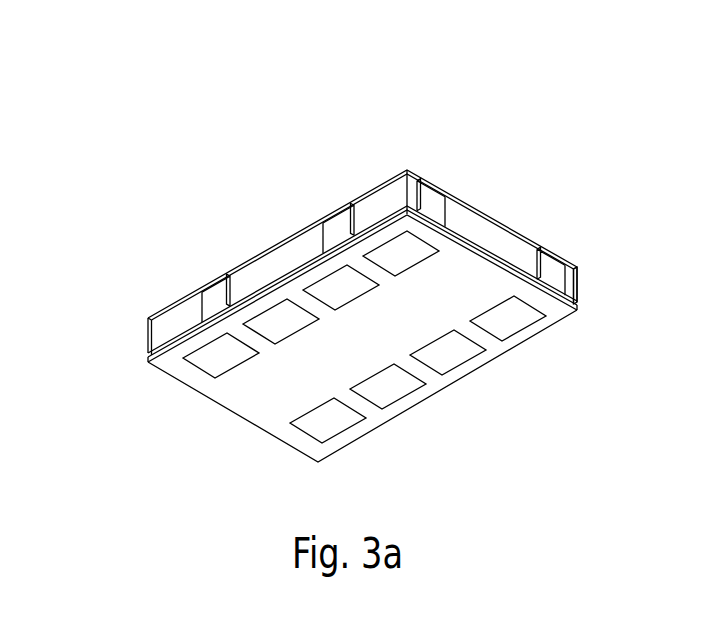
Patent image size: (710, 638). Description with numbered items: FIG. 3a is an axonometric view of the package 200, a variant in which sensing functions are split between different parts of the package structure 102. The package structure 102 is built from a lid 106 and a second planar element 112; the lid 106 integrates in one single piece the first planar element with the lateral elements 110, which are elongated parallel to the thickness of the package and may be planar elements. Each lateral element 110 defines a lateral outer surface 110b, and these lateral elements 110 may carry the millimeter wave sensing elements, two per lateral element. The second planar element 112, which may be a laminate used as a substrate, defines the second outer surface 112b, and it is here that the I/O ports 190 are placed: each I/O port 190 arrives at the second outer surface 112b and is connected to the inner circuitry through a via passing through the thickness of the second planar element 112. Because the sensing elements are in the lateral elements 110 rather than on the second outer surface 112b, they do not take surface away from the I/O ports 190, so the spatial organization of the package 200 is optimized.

The package 200 is at (443, 112).
The package structure 102 is at (581, 296).
The lid 106 is at (274, 243).
The lateral element 110 is at (177, 320).
The lateral outer surface 110b is at (382, 205).
The second planar element 112 is at (243, 397).
The second outer surface 112b is at (487, 233).
The I/O port 190 is at (382, 387).